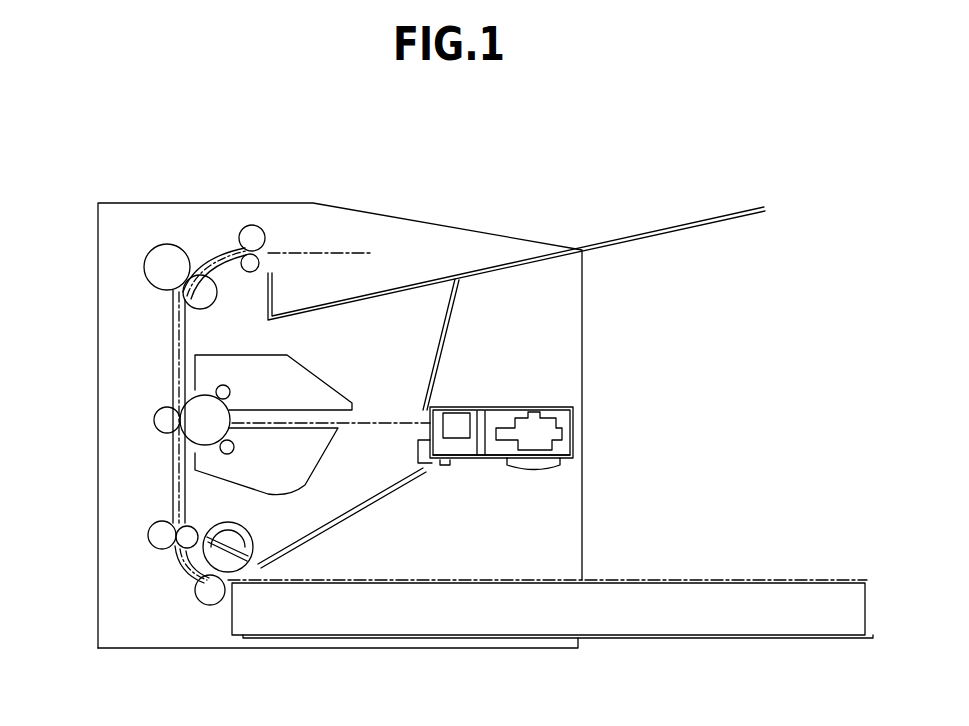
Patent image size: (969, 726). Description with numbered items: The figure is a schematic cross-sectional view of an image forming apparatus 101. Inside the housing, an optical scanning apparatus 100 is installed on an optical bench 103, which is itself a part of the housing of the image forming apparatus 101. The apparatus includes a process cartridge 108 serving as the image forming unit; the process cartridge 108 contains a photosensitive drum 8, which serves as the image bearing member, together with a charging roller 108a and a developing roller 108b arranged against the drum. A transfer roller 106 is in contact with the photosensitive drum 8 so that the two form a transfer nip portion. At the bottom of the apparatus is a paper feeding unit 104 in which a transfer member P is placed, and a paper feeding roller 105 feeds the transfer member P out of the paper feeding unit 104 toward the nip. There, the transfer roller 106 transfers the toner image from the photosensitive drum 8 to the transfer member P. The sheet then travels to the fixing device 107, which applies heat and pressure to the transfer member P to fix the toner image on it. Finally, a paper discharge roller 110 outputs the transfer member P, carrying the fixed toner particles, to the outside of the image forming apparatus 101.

The image forming apparatus 101 is at (127, 215).
The fixing device 107 is at (167, 252).
The paper discharge roller 110 is at (250, 235).
The photosensitive drum 8 is at (206, 404).
The process cartridge 108 is at (312, 407).
The charging roller 108a is at (229, 389).
The developing roller 108b is at (235, 447).
The transfer roller 106 is at (160, 424).
The paper feeding roller 105 is at (234, 527).
The optical scanning apparatus 100 is at (552, 408).
The optical bench 103 is at (480, 462).
The transfer member P is at (733, 578).
The paper feeding unit 104 is at (652, 640).